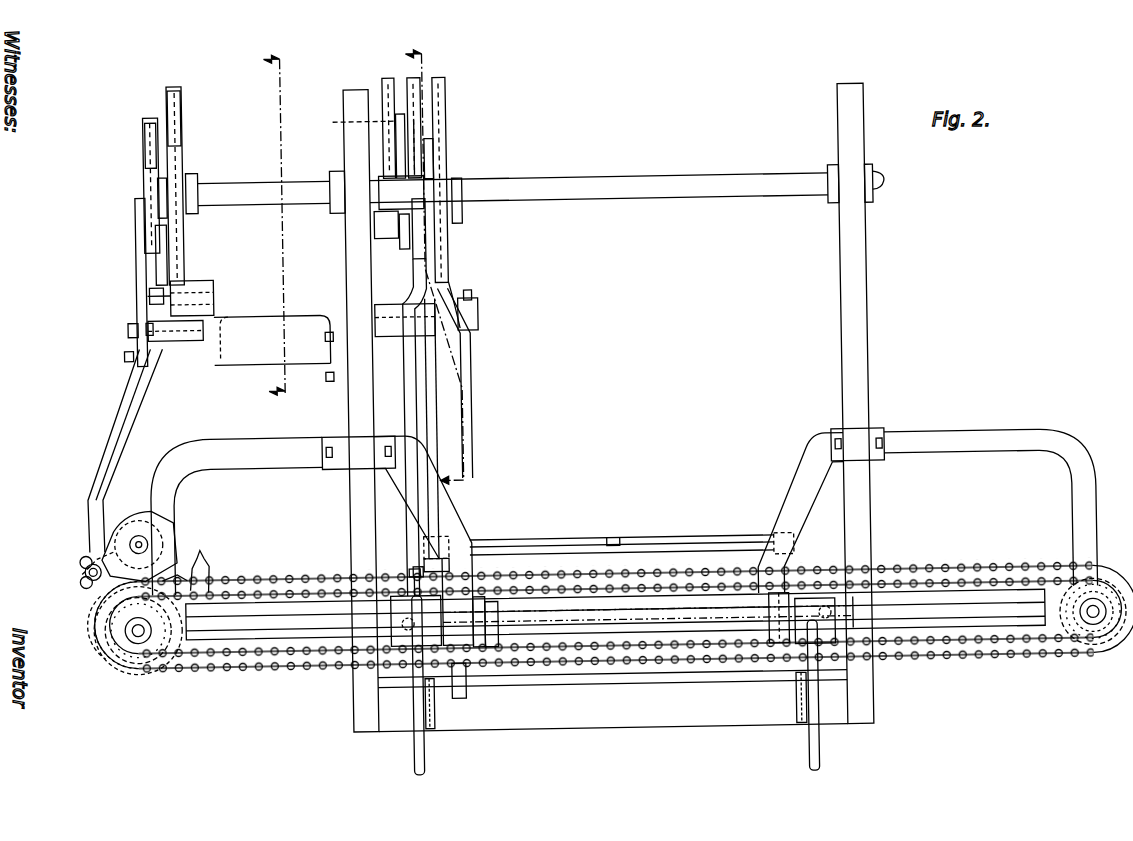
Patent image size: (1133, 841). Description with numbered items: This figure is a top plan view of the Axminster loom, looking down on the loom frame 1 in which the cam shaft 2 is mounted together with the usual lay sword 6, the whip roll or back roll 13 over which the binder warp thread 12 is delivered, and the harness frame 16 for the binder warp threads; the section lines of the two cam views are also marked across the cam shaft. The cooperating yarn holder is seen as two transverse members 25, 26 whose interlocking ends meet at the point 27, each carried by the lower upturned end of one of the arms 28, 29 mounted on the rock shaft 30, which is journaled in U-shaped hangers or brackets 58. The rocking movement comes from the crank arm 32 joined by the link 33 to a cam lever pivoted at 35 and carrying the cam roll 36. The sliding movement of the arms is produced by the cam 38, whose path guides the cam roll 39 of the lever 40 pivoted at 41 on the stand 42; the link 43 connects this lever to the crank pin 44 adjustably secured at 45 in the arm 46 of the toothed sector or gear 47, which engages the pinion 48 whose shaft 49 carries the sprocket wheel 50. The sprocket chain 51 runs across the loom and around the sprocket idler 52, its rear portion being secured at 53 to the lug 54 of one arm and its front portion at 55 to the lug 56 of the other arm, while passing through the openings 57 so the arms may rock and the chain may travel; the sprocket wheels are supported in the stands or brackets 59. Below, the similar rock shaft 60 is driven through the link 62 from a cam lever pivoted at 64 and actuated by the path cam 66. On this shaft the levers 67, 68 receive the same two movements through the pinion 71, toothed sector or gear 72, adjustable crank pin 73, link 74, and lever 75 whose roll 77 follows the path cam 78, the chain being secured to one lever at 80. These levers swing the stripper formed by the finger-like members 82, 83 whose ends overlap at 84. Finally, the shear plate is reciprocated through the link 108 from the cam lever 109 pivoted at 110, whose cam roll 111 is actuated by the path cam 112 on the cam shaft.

The loom frame 1 is at (349, 292).
The cam shaft 2 is at (680, 182).
The lay sword 6 is at (878, 177).
The binder warp thread 12 is at (449, 262).
The whip roll or back roll 13 is at (285, 219).
The harness frame 16 is at (128, 326).
The transverse member 25 is at (568, 612).
The transverse member 26 is at (672, 615).
The meeting point 27 is at (612, 620).
The arm 28 is at (415, 776).
The arm 29 is at (810, 778).
The rock shaft 30 is at (285, 640).
The crank arm 32 is at (485, 600).
The link 33 is at (432, 240).
The pivot 35 is at (420, 200).
The cam roll 36 is at (416, 275).
The cam 38 is at (180, 84).
The cam roll 39 is at (170, 236).
The lever 40 is at (168, 333).
The pivot 41 is at (150, 294).
The stand 42 is at (216, 296).
The link 43 is at (128, 408).
The crank pin 44 is at (83, 571).
The adjustable securing point 45 is at (82, 584).
The arm 46 is at (110, 537).
The toothed sector or gear 47 is at (192, 578).
The pinion 48 is at (110, 655).
The shaft 49 is at (130, 628).
The sprocket wheel 50 is at (140, 668).
The sprocket chain 51 is at (160, 668).
The sprocket idler 52 is at (1085, 640).
The securing point 53 is at (405, 575).
The lug 54 is at (420, 160).
The securing point 55 is at (812, 655).
The lug 56 is at (772, 660).
The opening 57 is at (419, 79).
The U-shaped hanger or bracket 58 is at (400, 485).
The stand or bracket 59 is at (262, 452).
The rock shaft 60 is at (215, 605).
The link 62 is at (440, 400).
The pivot 64 is at (480, 320).
The path cam 66 is at (444, 79).
The lever 67 is at (416, 568).
The lever 68 is at (792, 553).
The pinion 71 is at (100, 618).
The toothed sector or gear 72 is at (200, 552).
The adjustable crank pin 73 is at (80, 556).
The link 74 is at (108, 450).
The lever 75 is at (126, 355).
The roll 77 is at (144, 210).
The path cam 78 is at (155, 115).
The securing point 80 is at (425, 570).
The finger-like member 82 is at (528, 542).
The finger-like member 83 is at (698, 549).
The interlocking point 84 is at (611, 542).
The link 108 is at (427, 365).
The cam lever 109 is at (403, 245).
The pivot 110 is at (378, 228).
The cam roll 111 is at (346, 123).
The path cam 112 is at (394, 79).